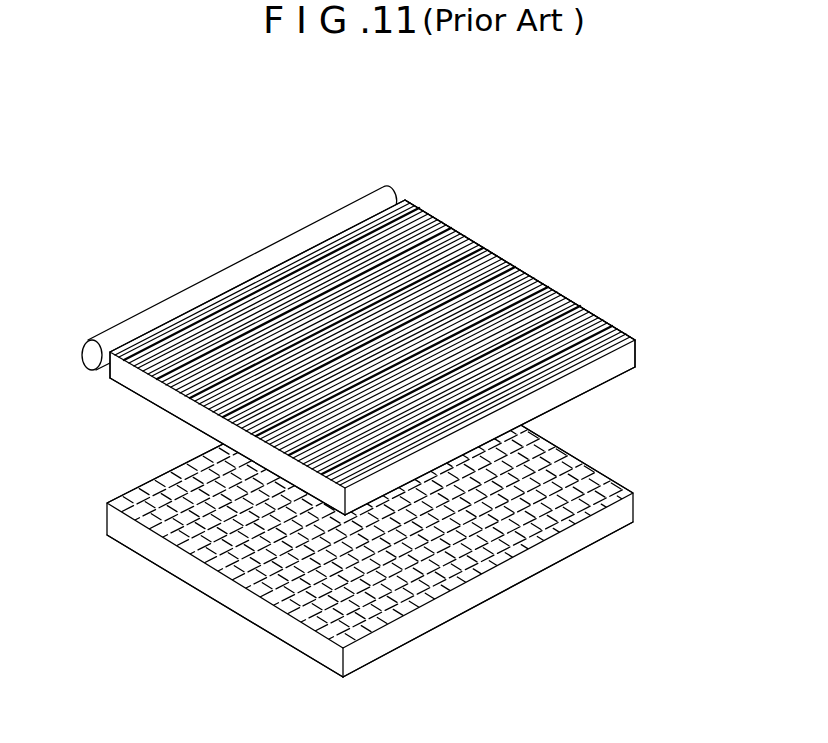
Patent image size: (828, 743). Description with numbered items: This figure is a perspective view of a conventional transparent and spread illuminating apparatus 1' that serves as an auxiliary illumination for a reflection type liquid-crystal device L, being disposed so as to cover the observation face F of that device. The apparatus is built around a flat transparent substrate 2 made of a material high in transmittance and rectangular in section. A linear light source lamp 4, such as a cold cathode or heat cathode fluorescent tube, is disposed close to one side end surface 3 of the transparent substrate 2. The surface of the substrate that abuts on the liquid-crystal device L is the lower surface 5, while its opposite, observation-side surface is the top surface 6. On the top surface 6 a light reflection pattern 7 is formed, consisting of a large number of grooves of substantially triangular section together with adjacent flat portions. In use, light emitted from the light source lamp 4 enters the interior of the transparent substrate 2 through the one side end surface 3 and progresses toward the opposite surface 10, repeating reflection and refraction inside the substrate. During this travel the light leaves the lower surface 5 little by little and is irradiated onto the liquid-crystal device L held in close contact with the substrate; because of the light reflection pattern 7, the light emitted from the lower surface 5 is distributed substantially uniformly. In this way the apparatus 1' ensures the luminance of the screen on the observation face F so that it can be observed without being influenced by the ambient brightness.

The transparent and spread illuminating apparatus 1' is at (399, 308).
The transparent substrate 2 is at (370, 335).
The one side end surface 3 is at (102, 372).
The light source lamp 4 is at (224, 279).
The lower surface 5 is at (163, 413).
The top surface 6 is at (222, 377).
The light reflection pattern 7 is at (585, 303).
The opposite surface 10 is at (610, 370).
The observation face F is at (548, 500).
The reflection type liquid-crystal device L is at (387, 519).